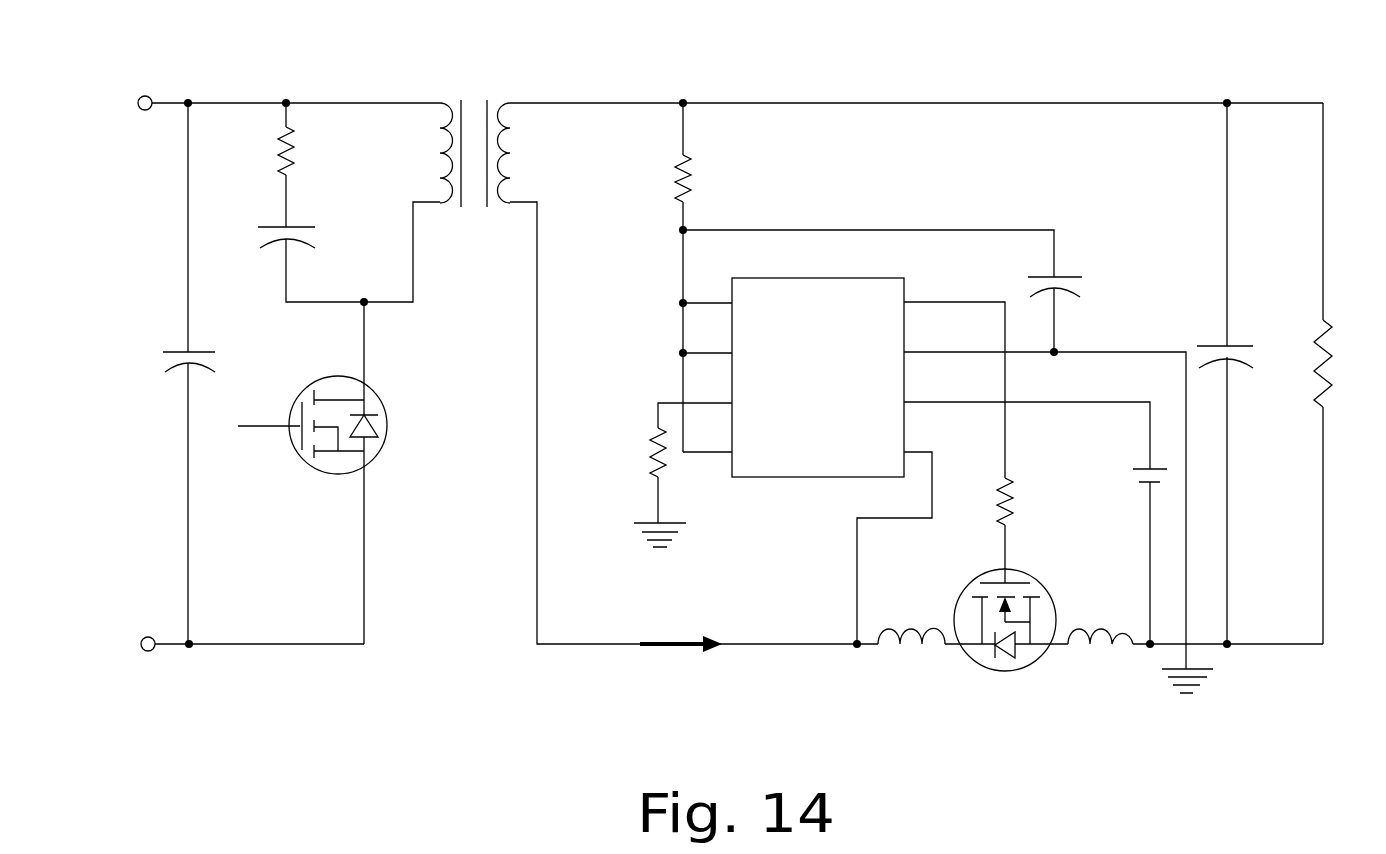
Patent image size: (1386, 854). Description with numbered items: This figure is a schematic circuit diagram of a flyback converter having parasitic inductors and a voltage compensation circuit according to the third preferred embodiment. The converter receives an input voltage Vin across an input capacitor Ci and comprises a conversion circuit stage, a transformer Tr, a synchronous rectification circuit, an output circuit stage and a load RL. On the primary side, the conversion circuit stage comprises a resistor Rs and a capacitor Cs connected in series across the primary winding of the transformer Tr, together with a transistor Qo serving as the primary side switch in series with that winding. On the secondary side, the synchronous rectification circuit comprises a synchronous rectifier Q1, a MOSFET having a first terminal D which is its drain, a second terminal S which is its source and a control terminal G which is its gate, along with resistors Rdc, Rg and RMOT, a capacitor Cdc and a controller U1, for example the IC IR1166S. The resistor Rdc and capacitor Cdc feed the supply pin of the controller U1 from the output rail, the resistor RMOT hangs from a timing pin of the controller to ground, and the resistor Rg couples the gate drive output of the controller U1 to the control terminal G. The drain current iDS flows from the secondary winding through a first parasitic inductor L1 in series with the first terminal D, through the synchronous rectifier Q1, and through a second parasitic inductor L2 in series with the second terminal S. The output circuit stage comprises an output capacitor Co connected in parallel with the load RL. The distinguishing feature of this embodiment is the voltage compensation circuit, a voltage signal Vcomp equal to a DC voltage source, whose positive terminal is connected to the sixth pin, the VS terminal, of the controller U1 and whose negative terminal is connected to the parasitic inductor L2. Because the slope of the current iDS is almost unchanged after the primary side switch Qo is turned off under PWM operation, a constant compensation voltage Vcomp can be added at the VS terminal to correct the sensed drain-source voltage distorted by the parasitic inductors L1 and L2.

The input voltage Vin is at (136, 128).
The input capacitor Ci is at (195, 340).
The resistor Rs is at (305, 151).
The capacitor Cs is at (305, 247).
The transformer Tr is at (475, 133).
The transistor Qo is at (328, 430).
The resistor Rdc is at (709, 178).
The controller U1 is at (817, 378).
The resistor RMOT is at (620, 452).
The capacitor Cdc is at (1066, 268).
The output capacitor Co is at (1235, 381).
The load RL is at (1338, 363).
The voltage compensation circuit Vcomp is at (1115, 455).
The resistor Rg is at (987, 501).
The first parasitic inductor L1 is at (911, 618).
The second parasitic inductor L2 is at (1100, 618).
The synchronous rectifier Q1 is at (1005, 640).
The control terminal G is at (1026, 547).
The first terminal D is at (860, 672).
The second terminal S is at (1147, 672).
The drain-source current iDS is at (681, 664).